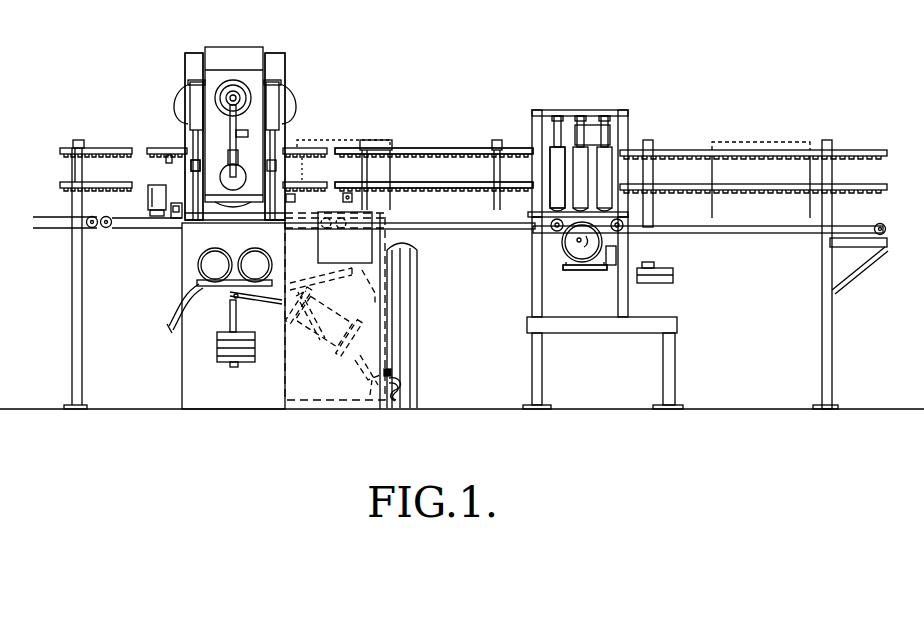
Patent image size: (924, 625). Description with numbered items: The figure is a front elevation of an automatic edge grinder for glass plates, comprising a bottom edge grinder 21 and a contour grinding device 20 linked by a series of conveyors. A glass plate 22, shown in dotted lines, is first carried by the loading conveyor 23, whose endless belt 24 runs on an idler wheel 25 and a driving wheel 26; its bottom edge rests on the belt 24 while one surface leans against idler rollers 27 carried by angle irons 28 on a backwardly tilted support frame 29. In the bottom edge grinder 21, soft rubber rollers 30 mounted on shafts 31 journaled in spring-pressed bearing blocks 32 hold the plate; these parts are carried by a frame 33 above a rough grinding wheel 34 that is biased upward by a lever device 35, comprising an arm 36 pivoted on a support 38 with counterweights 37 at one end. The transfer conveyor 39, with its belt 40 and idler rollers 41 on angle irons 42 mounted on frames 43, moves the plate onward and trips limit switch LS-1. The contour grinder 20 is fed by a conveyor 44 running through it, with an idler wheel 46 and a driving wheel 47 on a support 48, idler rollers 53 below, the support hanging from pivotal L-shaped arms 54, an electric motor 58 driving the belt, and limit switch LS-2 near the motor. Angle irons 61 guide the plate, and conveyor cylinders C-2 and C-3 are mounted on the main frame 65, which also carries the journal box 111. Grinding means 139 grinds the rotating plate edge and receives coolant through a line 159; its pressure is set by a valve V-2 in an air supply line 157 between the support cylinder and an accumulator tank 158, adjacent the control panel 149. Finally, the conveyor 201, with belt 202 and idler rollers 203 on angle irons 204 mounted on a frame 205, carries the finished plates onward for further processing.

The contour grinding device 20 is at (228, 40).
The journal box 111 is at (206, 50).
The main frame 65 is at (283, 56).
The conveyor cylinder C-2 is at (190, 101).
The conveyor cylinder C-3 is at (282, 101).
The conveyor 201 is at (62, 143).
The angle irons 204 is at (100, 132).
The angle irons 61 is at (132, 132).
The conveyor 44 is at (172, 148).
The idler rollers 203 is at (76, 160).
The idler rollers 53 is at (168, 160).
The L-shaped arms 54 is at (193, 164).
The belt 202 is at (75, 212).
The electric motor 58 is at (148, 197).
The driving wheel 47 is at (112, 226).
The support 48 is at (150, 226).
The frame 205 is at (70, 253).
The limit switch LS-2 is at (186, 219).
The coolant line 159 is at (180, 305).
The grinding means 139 is at (205, 334).
The glass plate 22 is at (348, 140).
The frames 43 is at (384, 140).
The transfer conveyor 39 is at (440, 122).
The angle irons 42 is at (406, 148).
The idler rollers 41 is at (443, 158).
The limit switch LS-1 is at (344, 194).
The idler wheel 46 is at (323, 226).
The belt 40 is at (459, 231).
The accumulator tank 158 is at (418, 282).
The control panel 149 is at (382, 318).
The valve V-2 is at (392, 373).
The air supply line 157 is at (400, 386).
The frame 33 is at (545, 117).
The bearing blocks 32 is at (580, 117).
The bottom edge grinder 21 is at (590, 96).
The shafts 31 is at (612, 122).
The support frame 29 is at (646, 140).
The idler rollers 27 is at (688, 158).
The angle irons 28 is at (668, 193).
The loading conveyor 23 is at (722, 123).
The driving wheel 26 is at (888, 224).
The soft rubber rollers 30 is at (550, 188).
The rough grinding wheel 34 is at (566, 256).
The idler wheel 25 is at (623, 231).
The endless belt 24 is at (684, 233).
The arm 36 is at (572, 271).
The support 38 is at (607, 266).
The lever device 35 is at (590, 278).
The counterweights 37 is at (673, 281).